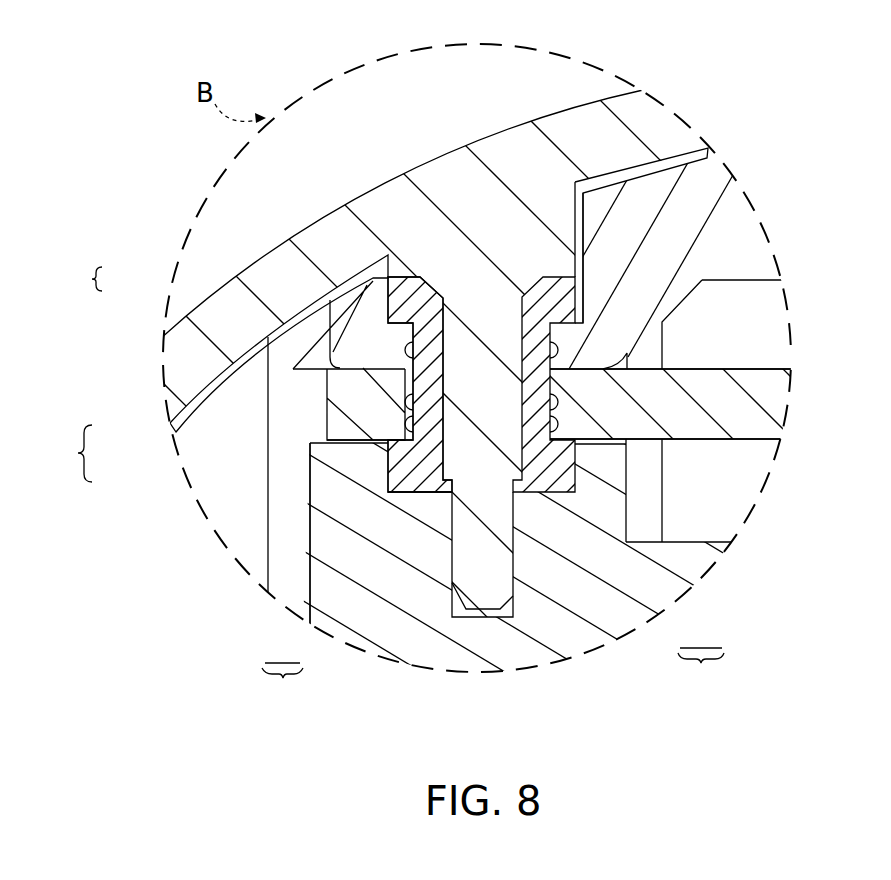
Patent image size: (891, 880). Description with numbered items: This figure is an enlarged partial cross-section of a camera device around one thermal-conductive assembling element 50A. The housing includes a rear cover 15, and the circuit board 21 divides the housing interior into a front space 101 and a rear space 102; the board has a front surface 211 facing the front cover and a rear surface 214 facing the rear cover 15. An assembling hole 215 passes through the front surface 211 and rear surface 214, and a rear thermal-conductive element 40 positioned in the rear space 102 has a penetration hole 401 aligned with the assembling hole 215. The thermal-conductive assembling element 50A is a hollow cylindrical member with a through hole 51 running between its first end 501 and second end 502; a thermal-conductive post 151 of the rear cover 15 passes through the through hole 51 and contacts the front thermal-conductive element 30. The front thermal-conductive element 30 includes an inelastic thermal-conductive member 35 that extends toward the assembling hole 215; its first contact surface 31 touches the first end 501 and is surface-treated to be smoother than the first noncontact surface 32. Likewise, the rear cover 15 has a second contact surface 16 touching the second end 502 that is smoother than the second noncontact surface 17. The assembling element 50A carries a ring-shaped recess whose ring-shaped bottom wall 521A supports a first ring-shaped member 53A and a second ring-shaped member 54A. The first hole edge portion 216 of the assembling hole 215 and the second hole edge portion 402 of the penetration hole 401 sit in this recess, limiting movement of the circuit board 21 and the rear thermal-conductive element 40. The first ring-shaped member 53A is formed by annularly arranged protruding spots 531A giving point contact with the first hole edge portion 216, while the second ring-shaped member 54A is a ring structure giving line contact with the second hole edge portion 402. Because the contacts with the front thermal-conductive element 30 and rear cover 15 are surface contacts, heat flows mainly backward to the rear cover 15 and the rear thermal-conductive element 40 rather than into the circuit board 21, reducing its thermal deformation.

The rear cover 15 is at (600, 133).
The thermal-conductive post 151 is at (488, 568).
The through hole 51 is at (426, 462).
The thermal-conductive assembling element 50A is at (378, 387).
The first end 501 is at (568, 455).
The second end 502 is at (408, 270).
The second noncontact surface 17 is at (682, 175).
The rear thermal-conductive element 40 is at (680, 227).
The second contact surface 16 is at (575, 297).
The rear space 102 is at (747, 325).
The circuit board 21 is at (707, 423).
The rear surface 214 is at (737, 369).
The front surface 211 is at (718, 440).
The front space 101 is at (703, 518).
The assembling hole 215 is at (649, 563).
The first hole edge portion 216 is at (600, 550).
The front thermal-conductive element 30 is at (531, 558).
The inelastic thermal-conductive member 35 is at (327, 570).
The first contact surface 31 is at (412, 490).
The first noncontact surface 32 is at (310, 540).
The penetration hole 401 is at (207, 316).
The second hole edge portion 402 is at (352, 338).
The second ring-shaped member 54A is at (405, 348).
The first ring-shaped member 53A is at (216, 426).
The protruding spot 531A is at (405, 398).
The ring-shaped bottom wall 521A is at (405, 440).